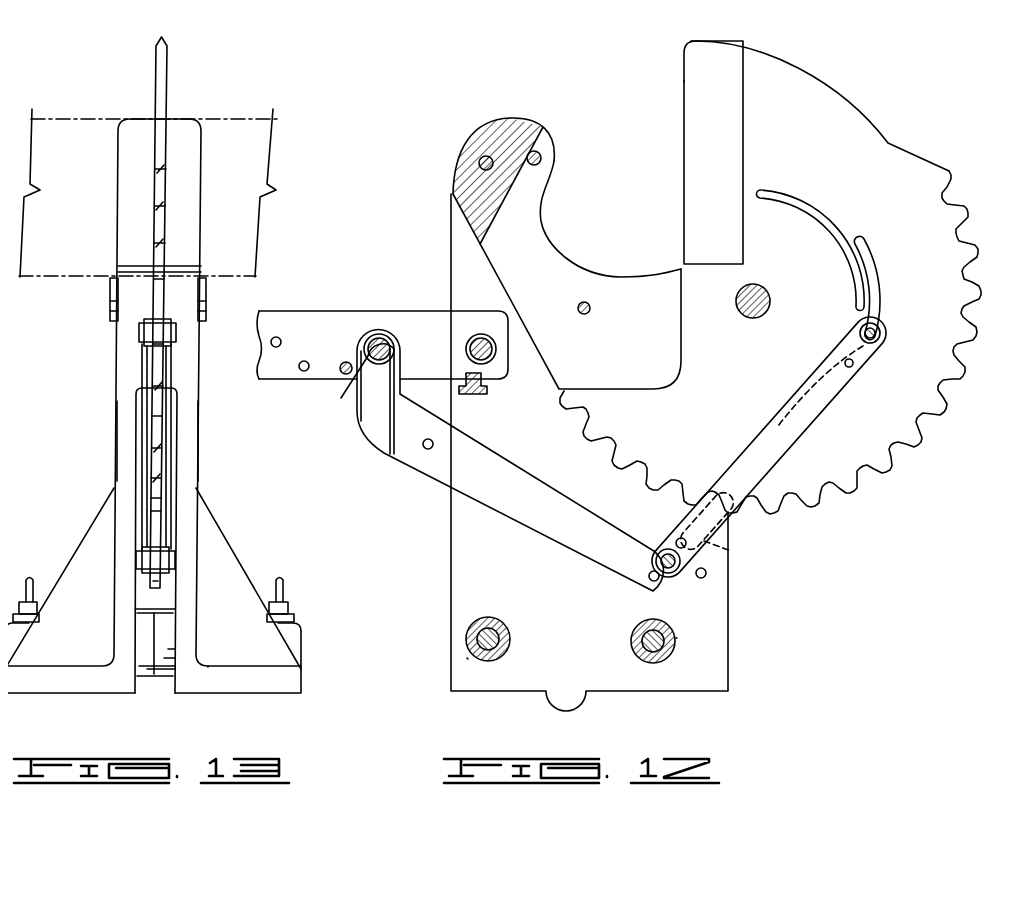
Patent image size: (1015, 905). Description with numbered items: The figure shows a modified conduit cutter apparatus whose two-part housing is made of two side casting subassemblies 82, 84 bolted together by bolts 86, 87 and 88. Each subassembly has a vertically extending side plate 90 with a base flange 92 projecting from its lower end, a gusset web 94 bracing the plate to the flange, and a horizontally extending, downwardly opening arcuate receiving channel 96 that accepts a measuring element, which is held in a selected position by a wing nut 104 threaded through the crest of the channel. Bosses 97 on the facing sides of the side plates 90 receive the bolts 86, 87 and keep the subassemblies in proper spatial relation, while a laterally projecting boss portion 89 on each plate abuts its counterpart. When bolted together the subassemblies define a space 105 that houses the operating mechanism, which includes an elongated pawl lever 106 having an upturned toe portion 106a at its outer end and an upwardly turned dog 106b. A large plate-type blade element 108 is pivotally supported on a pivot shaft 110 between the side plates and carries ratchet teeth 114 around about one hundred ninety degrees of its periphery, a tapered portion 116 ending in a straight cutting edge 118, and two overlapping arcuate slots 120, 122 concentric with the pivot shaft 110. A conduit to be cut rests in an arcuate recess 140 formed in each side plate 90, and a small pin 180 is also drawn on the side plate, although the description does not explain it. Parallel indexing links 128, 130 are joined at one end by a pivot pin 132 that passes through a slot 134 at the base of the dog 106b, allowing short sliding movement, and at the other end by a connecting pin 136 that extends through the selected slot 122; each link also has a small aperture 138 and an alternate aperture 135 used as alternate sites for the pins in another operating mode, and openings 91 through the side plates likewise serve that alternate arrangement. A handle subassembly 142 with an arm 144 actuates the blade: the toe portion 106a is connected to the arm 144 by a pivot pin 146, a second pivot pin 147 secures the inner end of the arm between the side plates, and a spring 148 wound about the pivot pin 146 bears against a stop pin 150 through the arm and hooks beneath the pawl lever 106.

In FIG. 13, the side casting subassembly 82 is at (180, 368).
In FIG. 13, the side casting subassembly 84 is at (116, 365).
In FIG. 12, the bolt 86 is at (478, 617).
In FIG. 12, the bolt 87 is at (632, 632).
In FIG. 12, the bolt 88 is at (480, 158).
In FIG. 12, the boss portion 89 is at (517, 118).
In FIG. 13, the side plate 90 is at (125, 408).
In FIG. 12, the side plate 90 is at (546, 447).
In FIG. 12, the opening 91 is at (705, 575).
In FIG. 13, the base flange 92 is at (38, 683).
In FIG. 13, the gusset web 94 is at (78, 622).
In FIG. 13, the receiving channel 96 is at (296, 636).
In FIG. 12, the receiving channel 96 is at (566, 680).
In FIG. 13, the boss 97 is at (166, 638).
In FIG. 12, the boss 97 is at (466, 657).
In FIG. 13, the wing nut 104 is at (28, 576).
In FIG. 13, the space 105 is at (162, 592).
In FIG. 12, the pawl lever 106 is at (534, 504).
In FIG. 12, the upturned toe portion 106a is at (362, 416).
In FIG. 12, the upwardly turned dog 106b is at (735, 547).
In FIG. 13, the blade element 108 is at (172, 83).
In FIG. 12, the blade element 108 is at (840, 118).
In FIG. 12, the pivot shaft 110 is at (735, 303).
In FIG. 13, the ratchet teeth 114 is at (166, 252).
In FIG. 12, the ratchet teeth 114 is at (930, 425).
In FIG. 12, the tapered portion 116 is at (727, 151).
In FIG. 12, the cutting edge 118 is at (683, 62).
In FIG. 12, the arcuate slot 120 is at (872, 246).
In FIG. 12, the arcuate slot 122 is at (766, 196).
In FIG. 13, the indexing link 128 is at (147, 465).
In FIG. 12, the indexing link 128 is at (777, 443).
In FIG. 13, the indexing link 130 is at (163, 465).
In FIG. 13, the pivot pin 132 is at (135, 556).
In FIG. 12, the pivot pin 132 is at (655, 558).
In FIG. 12, the slot 134 is at (658, 579).
In FIG. 12, the alternate aperture 135 is at (677, 538).
In FIG. 13, the connecting pin 136 is at (138, 328).
In FIG. 12, the connecting pin 136 is at (880, 330).
In FIG. 12, the aperture 138 is at (843, 362).
In FIG. 12, the arcuate recess 140 is at (560, 250).
In FIG. 12, the handle subassembly 142 is at (297, 302).
In FIG. 12, the arm 144 is at (437, 325).
In FIG. 12, the pivot pin 146 is at (377, 333).
In FIG. 12, the pivot pin 147 is at (465, 350).
In FIG. 12, the spring 148 is at (389, 453).
In FIG. 12, the stop pin 150 is at (341, 361).
In FIG. 12, the pin 180 is at (590, 304).